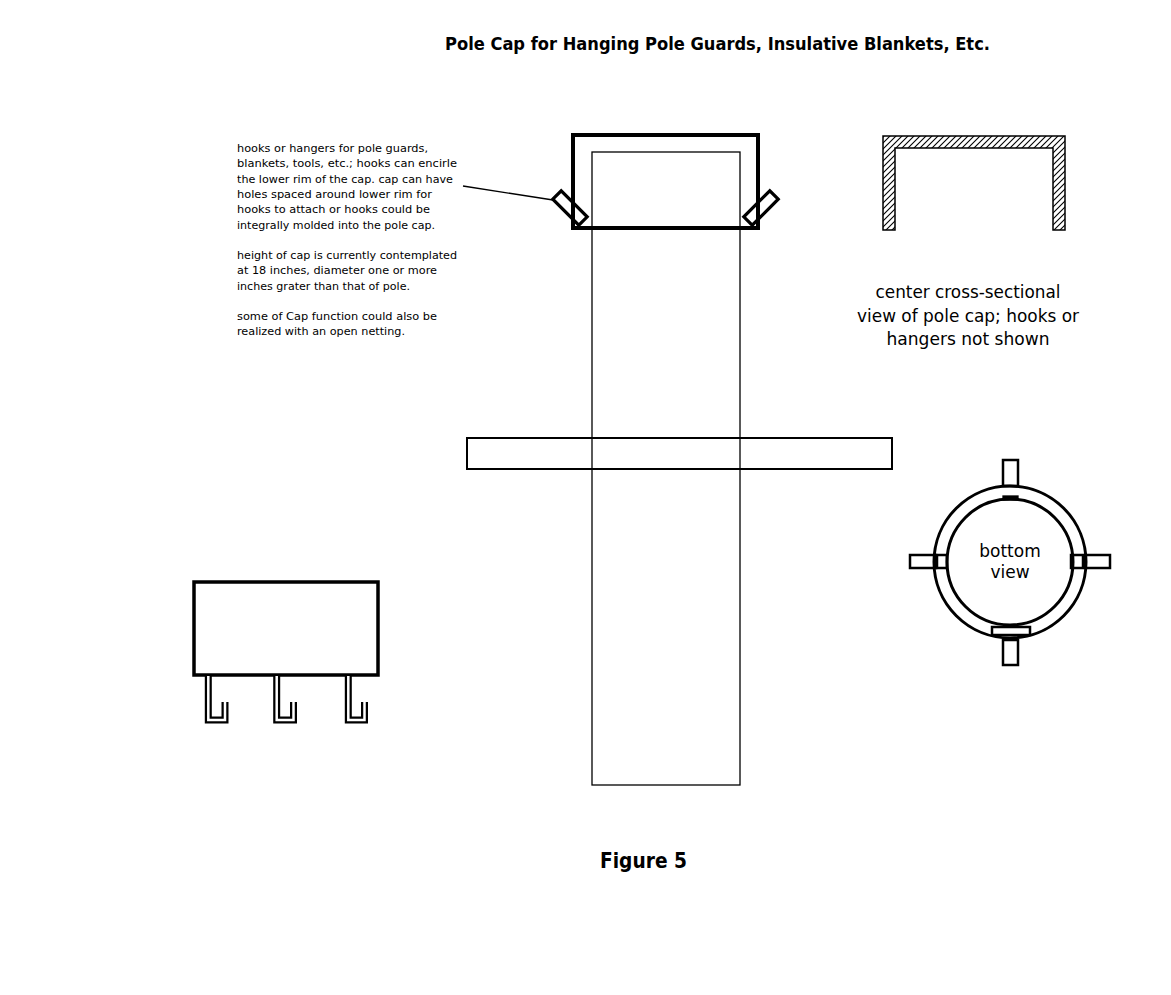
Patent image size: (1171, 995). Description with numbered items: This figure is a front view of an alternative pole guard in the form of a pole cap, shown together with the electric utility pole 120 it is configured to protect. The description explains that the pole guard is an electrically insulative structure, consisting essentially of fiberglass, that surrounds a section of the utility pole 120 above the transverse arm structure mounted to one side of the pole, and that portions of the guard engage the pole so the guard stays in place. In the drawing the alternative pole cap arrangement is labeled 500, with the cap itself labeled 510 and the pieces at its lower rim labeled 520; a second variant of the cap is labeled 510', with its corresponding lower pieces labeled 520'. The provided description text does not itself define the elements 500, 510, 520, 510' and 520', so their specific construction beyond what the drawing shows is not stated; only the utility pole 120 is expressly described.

The pole cap assembly 500 is at (350, 72).
The pole cap 510 is at (819, 157).
The hooks or hangers 520 is at (630, 183).
The electric utility pole 120 is at (727, 632).
The cap with integrally molded hooks 510' is at (249, 606).
The integrally molded J hooks 520' is at (236, 714).